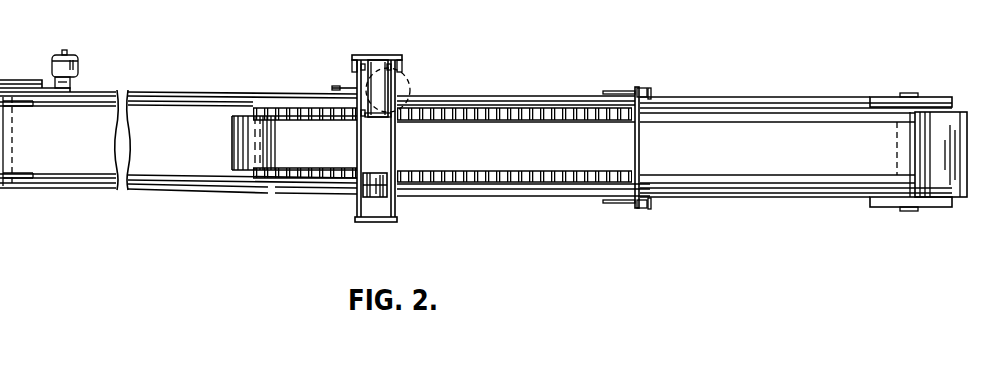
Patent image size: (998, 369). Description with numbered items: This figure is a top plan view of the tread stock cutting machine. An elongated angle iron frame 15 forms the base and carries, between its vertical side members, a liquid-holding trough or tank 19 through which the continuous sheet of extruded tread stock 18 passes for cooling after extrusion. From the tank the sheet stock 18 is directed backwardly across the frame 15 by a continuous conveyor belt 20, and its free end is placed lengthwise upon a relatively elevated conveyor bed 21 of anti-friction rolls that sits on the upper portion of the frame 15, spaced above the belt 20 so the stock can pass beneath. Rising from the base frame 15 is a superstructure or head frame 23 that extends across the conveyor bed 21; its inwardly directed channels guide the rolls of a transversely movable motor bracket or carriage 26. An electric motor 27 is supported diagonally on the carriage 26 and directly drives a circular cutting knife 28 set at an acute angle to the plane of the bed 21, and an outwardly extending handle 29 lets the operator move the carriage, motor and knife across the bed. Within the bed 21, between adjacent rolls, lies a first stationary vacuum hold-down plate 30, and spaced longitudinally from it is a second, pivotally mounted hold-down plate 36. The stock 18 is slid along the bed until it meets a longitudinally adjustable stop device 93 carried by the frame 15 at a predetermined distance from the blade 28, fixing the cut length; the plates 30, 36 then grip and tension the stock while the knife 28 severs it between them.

The angle iron frame 15 is at (217, 190).
The sheet of extruded tread stock 18 is at (457, 140).
The liquid-holding trough or tank 19 is at (943, 163).
The continuous conveyor belt 20 is at (175, 108).
The conveyor bed 21 is at (502, 110).
The superstructure or head frame 23 is at (384, 56).
The motor bracket or carriage 26 is at (373, 90).
The electric motor 27 is at (395, 128).
The circular cutting knife 28 is at (393, 97).
The handle 29 is at (335, 86).
The first stationary vacuum hold-down plate 30 is at (367, 182).
The second hold-down plate 36 is at (384, 192).
The longitudinally adjustable stop device 93 is at (640, 151).